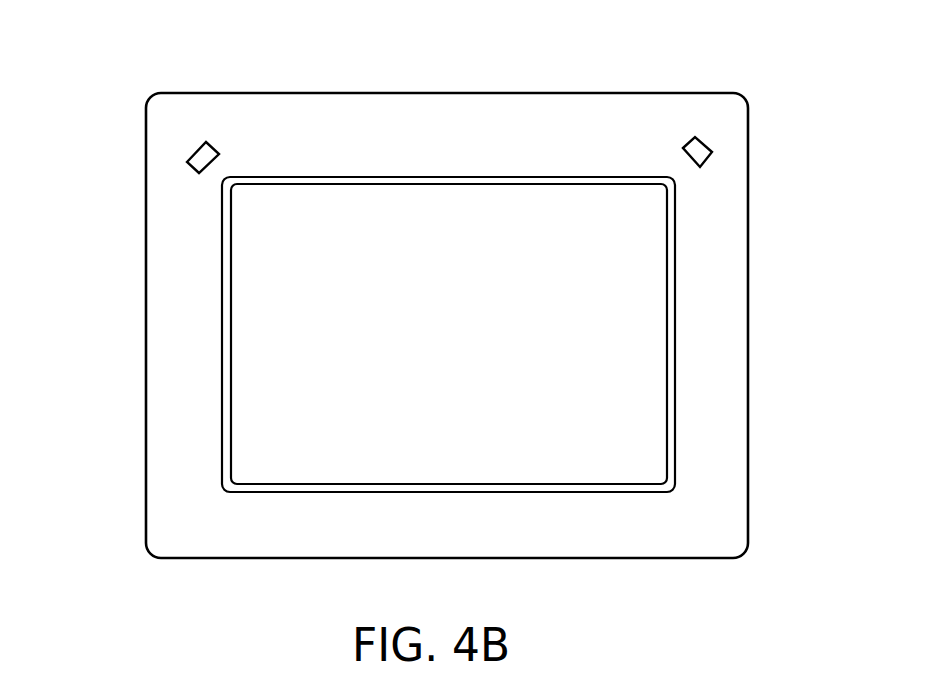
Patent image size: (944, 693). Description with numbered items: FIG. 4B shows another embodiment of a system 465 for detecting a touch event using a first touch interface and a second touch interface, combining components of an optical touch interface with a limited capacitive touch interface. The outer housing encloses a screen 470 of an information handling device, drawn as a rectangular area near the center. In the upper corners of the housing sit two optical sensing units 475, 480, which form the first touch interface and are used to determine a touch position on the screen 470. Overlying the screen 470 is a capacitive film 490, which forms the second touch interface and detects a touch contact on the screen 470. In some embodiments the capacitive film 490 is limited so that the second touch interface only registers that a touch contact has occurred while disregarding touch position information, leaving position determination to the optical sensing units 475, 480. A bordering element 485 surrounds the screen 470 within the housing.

The system 465 is at (88, 65).
The screen 470 is at (231, 422).
The optical sensing unit 475 is at (188, 163).
The optical sensing unit 480 is at (712, 154).
The inner bezel 485 is at (222, 348).
The capacitive film 490 is at (273, 278).